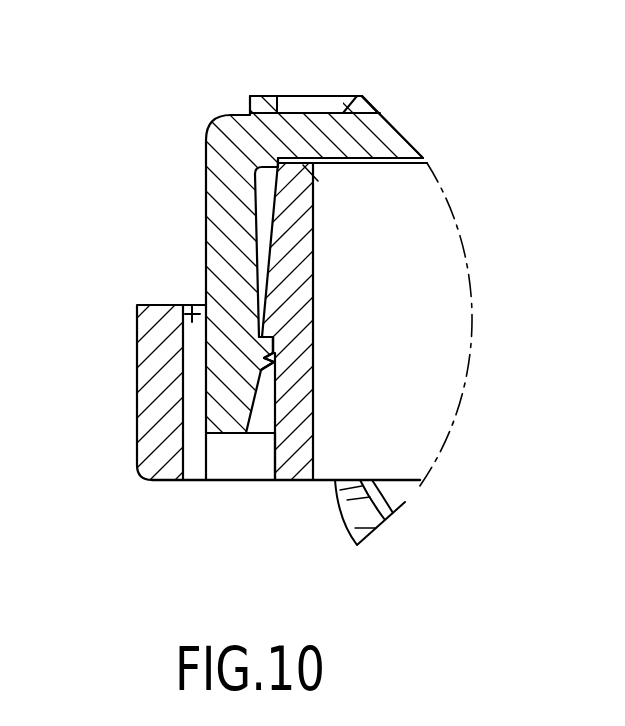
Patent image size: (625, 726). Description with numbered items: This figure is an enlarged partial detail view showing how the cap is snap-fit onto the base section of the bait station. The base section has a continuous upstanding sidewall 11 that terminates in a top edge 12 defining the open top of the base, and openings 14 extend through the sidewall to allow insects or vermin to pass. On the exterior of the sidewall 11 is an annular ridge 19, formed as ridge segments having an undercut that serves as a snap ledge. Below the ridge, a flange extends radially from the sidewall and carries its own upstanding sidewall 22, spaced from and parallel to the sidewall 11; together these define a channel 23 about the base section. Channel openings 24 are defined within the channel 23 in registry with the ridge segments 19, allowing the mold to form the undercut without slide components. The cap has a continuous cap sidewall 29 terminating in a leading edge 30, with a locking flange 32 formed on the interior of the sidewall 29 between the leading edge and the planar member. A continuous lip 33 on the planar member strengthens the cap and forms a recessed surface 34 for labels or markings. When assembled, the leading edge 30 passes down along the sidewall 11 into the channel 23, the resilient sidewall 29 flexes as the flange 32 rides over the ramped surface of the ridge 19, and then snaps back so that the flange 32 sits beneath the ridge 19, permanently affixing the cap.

The upstanding sidewall 11 is at (313, 437).
The top edge 12 is at (318, 183).
The radially spaced openings 14 is at (315, 540).
The annular ridge 19 is at (266, 322).
The upstanding sidewall of the flange 22 is at (147, 410).
The channel 23 is at (193, 305).
The channel openings 24 is at (232, 467).
The cap sidewall 29 is at (215, 237).
The leading edge 30 is at (217, 435).
The locking flange 32 is at (263, 356).
The continuous lip 33 is at (267, 95).
The recessed surface 34 is at (362, 96).